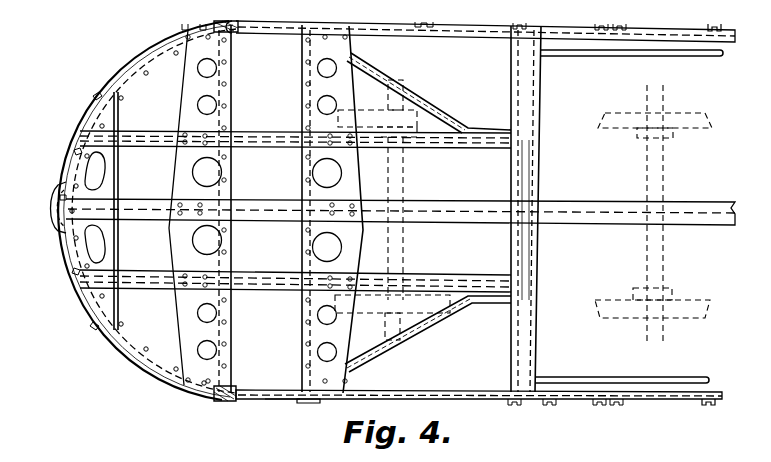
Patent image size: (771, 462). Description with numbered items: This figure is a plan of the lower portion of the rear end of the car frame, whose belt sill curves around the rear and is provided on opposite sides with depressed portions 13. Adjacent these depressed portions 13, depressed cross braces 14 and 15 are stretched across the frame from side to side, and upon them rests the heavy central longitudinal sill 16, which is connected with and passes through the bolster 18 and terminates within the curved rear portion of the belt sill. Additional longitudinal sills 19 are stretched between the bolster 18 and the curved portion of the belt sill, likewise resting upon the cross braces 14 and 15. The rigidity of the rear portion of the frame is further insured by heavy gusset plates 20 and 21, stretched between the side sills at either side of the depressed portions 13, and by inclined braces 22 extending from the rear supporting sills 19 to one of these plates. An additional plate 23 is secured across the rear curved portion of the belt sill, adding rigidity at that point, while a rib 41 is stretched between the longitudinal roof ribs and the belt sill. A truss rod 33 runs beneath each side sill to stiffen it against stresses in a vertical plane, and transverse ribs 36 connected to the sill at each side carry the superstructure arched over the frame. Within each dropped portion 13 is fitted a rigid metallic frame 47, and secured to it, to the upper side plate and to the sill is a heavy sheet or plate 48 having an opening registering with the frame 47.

The depressed portions 13 is at (251, 38).
The depressed cross brace 14 is at (220, 333).
The depressed cross brace 15 is at (303, 182).
The central longitudinal sill 16 is at (577, 208).
The bolster 18 is at (532, 327).
The additional longitudinal sills 19 is at (143, 131).
The gusset plate 20 is at (184, 154).
The gusset plate 21 is at (348, 190).
The inclined braces 22 is at (416, 99).
The additional plate 23 is at (82, 244).
The truss rod 33 is at (670, 378).
The transverse ribs 36 is at (712, 40).
The rib 41 is at (79, 355).
The rigid metallic frame 47 is at (236, 380).
The heavy sheet or plate 48 is at (281, 400).